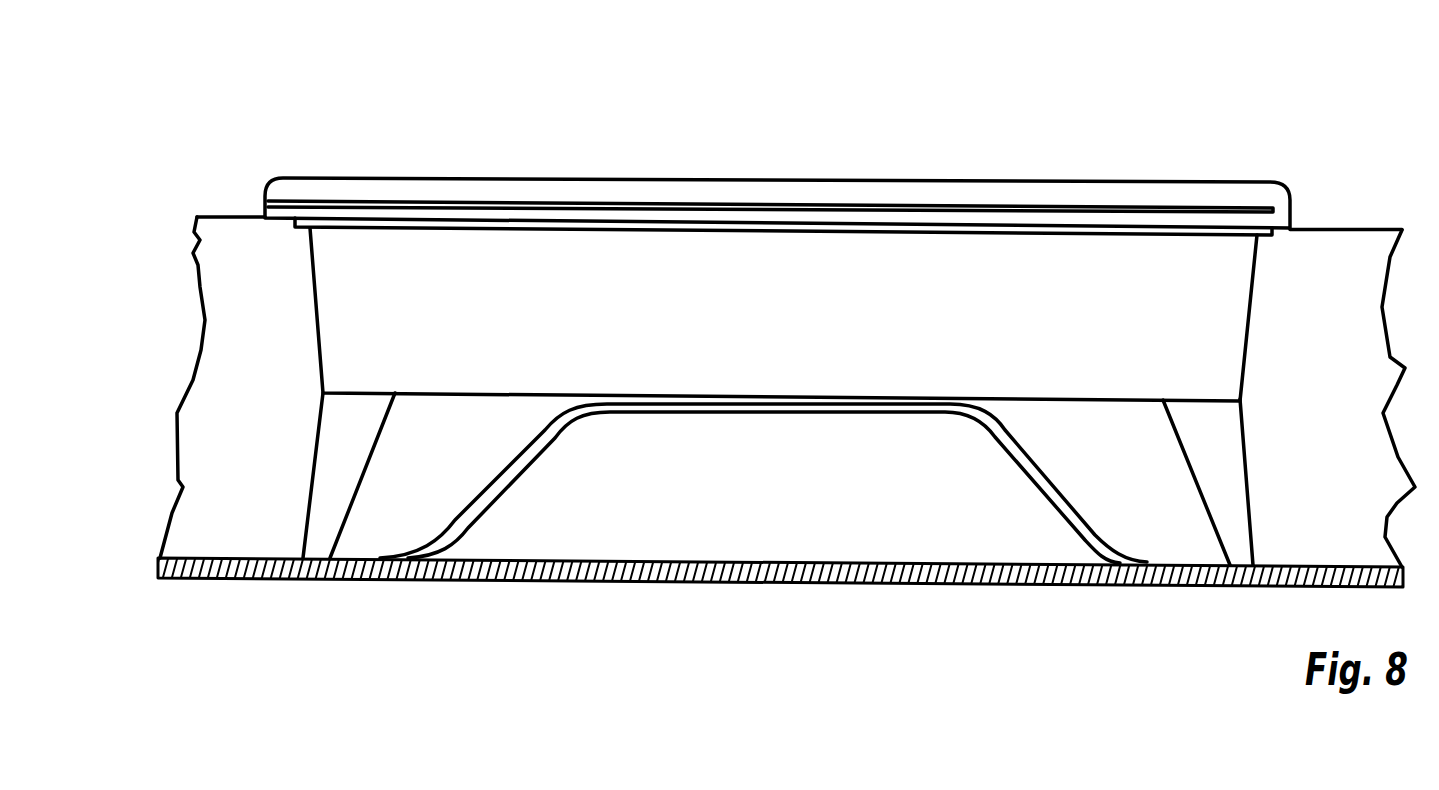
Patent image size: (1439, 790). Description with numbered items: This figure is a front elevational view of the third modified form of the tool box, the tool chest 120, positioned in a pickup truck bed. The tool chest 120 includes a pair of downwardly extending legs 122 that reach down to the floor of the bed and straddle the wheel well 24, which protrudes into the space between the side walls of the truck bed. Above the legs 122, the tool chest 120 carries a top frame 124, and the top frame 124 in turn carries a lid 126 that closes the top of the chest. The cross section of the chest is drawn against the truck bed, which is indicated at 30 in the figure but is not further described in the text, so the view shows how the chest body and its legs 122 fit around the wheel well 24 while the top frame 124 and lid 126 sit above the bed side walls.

The wheel well 24 is at (780, 500).
The housing 30 is at (300, 302).
The tool chest 120 is at (626, 166).
The downwardly extending legs 122 is at (340, 463).
The top frame 124 is at (254, 204).
The lid 126 is at (453, 192).